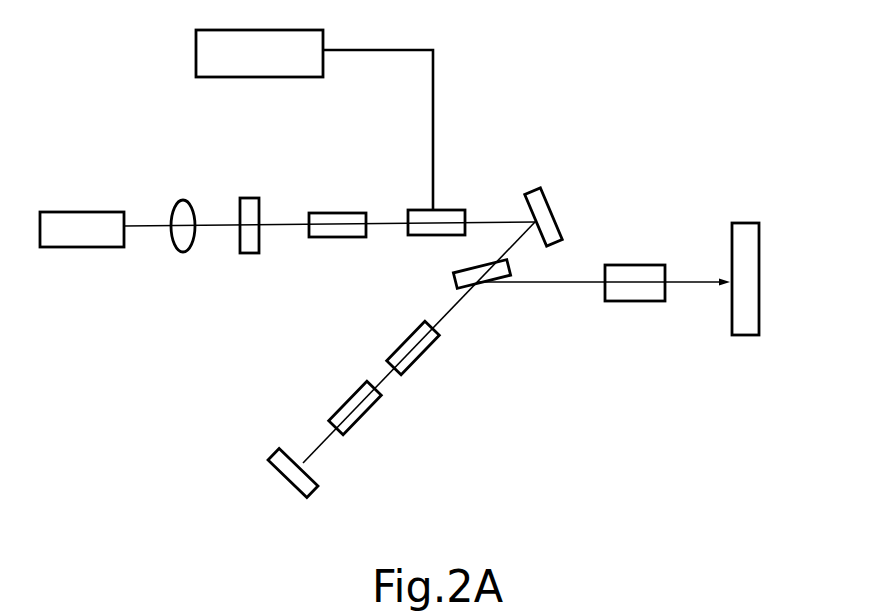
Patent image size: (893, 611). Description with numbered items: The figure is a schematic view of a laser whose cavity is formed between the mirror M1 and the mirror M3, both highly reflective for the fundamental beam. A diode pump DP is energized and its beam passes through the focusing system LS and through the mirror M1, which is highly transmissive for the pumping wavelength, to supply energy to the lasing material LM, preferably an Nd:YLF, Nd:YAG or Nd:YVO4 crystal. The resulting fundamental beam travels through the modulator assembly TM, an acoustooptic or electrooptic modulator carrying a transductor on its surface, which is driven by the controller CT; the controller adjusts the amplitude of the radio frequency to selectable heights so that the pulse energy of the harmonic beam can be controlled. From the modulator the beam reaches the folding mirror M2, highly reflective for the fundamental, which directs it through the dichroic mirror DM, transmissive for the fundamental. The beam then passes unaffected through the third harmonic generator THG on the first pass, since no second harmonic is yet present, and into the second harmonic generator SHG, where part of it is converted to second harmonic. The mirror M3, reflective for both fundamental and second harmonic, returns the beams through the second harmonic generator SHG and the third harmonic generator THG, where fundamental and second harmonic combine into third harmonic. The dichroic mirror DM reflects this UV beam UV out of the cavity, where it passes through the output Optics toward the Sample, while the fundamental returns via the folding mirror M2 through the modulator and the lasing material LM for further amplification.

The diode pump DP is at (82, 203).
The focusing system LS is at (188, 206).
The mirror M1 is at (249, 206).
The lasing material LM is at (337, 197).
The transductor and modulator TM is at (438, 204).
The controller CT is at (314, 120).
The folding mirror M2 is at (557, 211).
The dichroic mirror DM is at (485, 294).
The UV beam UV is at (603, 317).
The output optics Optics is at (638, 259).
The sample Sample is at (742, 305).
The third harmonic generator THG is at (434, 356).
The second harmonic generator SHG is at (380, 416).
The mirror M3 is at (281, 484).